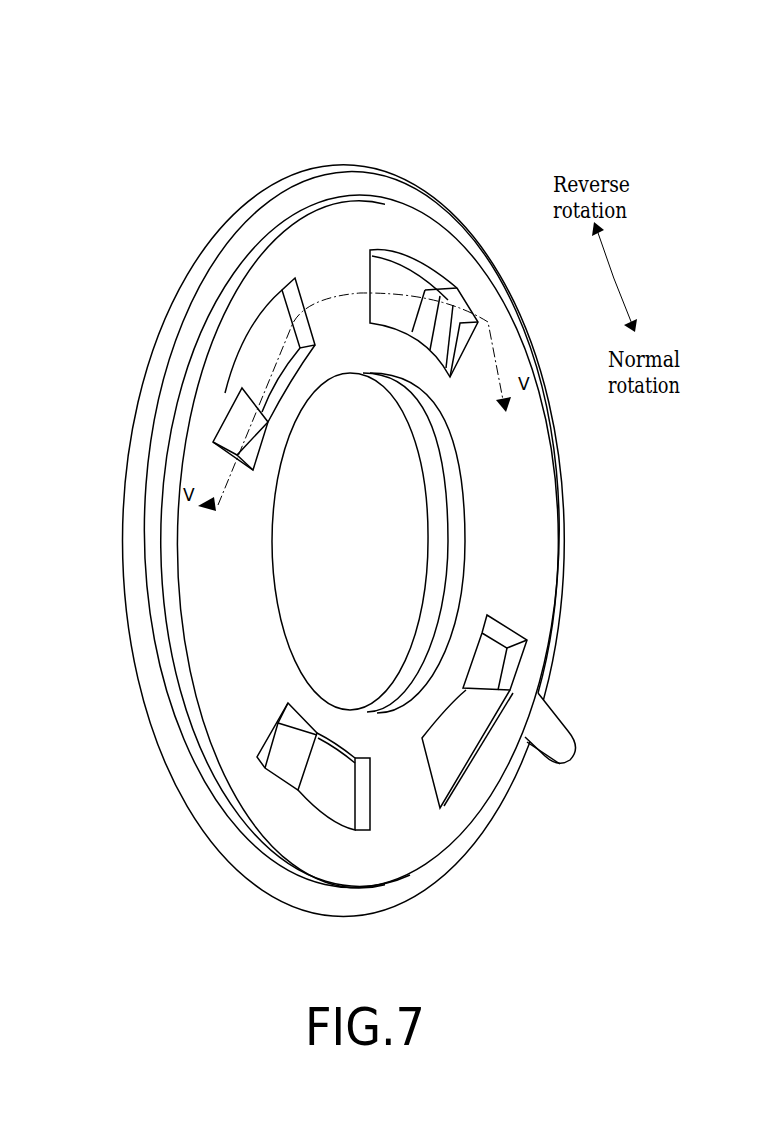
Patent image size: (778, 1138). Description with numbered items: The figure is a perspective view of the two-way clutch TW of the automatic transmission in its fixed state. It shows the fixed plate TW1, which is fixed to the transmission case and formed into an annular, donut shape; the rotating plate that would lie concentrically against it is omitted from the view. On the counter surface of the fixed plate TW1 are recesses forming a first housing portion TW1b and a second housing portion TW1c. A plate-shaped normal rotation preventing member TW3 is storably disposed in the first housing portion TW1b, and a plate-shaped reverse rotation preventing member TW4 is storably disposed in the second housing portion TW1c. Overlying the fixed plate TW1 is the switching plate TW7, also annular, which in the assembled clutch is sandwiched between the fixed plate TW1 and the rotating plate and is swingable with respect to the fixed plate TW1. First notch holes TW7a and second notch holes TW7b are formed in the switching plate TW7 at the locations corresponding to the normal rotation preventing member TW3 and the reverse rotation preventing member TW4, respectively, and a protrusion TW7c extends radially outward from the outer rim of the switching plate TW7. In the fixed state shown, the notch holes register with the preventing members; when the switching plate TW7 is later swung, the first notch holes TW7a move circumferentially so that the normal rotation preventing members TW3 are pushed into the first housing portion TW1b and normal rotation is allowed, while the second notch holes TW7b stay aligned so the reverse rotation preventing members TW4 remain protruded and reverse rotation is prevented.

The two-way clutch TW is at (117, 86).
The fixed plate TW1 is at (401, 188).
The first housing portion TW1b is at (428, 305).
The second housing portion TW1c is at (485, 670).
The normal rotation preventing member TW3 is at (470, 318).
The reverse rotation preventing member TW4 is at (230, 412).
The switching plate TW7 is at (312, 237).
The first notch holes TW7a is at (405, 280).
The second notch holes TW7b is at (276, 326).
The protrusion TW7c is at (560, 727).